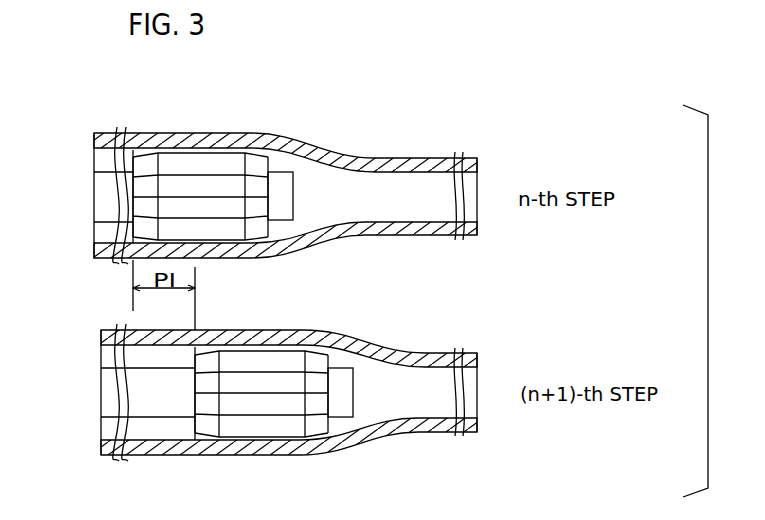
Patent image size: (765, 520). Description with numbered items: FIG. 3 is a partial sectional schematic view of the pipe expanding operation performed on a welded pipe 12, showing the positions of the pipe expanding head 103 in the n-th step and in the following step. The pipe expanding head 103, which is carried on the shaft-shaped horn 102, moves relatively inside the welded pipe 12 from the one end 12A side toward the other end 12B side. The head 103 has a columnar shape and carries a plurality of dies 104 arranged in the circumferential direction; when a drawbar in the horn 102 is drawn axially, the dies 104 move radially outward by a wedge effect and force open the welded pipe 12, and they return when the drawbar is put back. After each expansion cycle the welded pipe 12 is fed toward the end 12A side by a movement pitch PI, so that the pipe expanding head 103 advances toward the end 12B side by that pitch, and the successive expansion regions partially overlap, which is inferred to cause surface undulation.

The welded pipe 12 is at (431, 166).
The one end 12A is at (94, 231).
The other end 12B is at (478, 190).
The horn 102 is at (125, 150).
The pipe expanding head 103 is at (278, 236).
The dies 104 is at (253, 168).